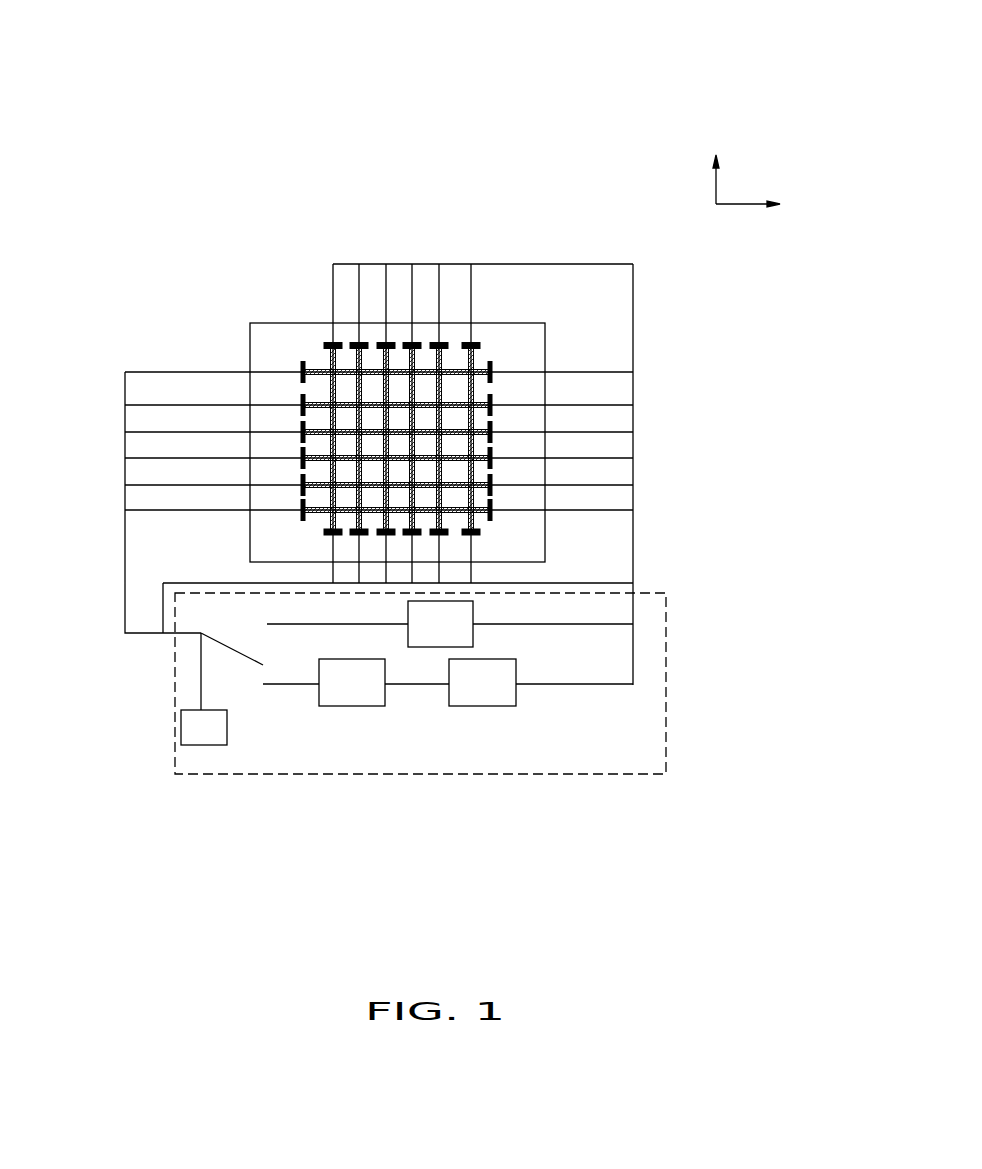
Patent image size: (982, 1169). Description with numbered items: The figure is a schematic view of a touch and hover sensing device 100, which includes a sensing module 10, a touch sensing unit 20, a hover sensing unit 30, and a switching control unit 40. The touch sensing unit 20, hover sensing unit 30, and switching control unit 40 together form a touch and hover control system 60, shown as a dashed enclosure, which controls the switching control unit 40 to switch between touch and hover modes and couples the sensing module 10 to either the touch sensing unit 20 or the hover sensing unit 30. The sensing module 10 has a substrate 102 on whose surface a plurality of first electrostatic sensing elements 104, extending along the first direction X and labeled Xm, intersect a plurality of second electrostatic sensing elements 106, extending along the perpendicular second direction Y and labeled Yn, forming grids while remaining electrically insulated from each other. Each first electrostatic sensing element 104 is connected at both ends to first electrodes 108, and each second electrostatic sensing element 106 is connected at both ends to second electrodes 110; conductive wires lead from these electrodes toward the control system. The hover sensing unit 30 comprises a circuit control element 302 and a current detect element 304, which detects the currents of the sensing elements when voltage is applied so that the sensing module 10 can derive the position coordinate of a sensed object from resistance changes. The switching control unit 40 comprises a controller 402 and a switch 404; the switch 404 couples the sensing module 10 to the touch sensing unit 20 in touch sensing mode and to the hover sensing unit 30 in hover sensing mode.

The touch and hover sensing device 100 is at (492, 90).
The sensing module 10 is at (197, 159).
The substrate 102 is at (263, 350).
The first electrostatic sensing elements 104 is at (312, 370).
The second electrostatic sensing elements 106 is at (328, 352).
The first electrodes 108 is at (303, 362).
The second electrodes 110 is at (331, 344).
The touch sensing unit 20 is at (474, 612).
The hover sensing unit 30 is at (524, 834).
The circuit control element 302 is at (365, 707).
The current detect element 304 is at (477, 707).
The switching control unit 40 is at (88, 658).
The controller 402 is at (195, 708).
The switch 404 is at (233, 650).
The touch and hover control system 60 is at (295, 773).